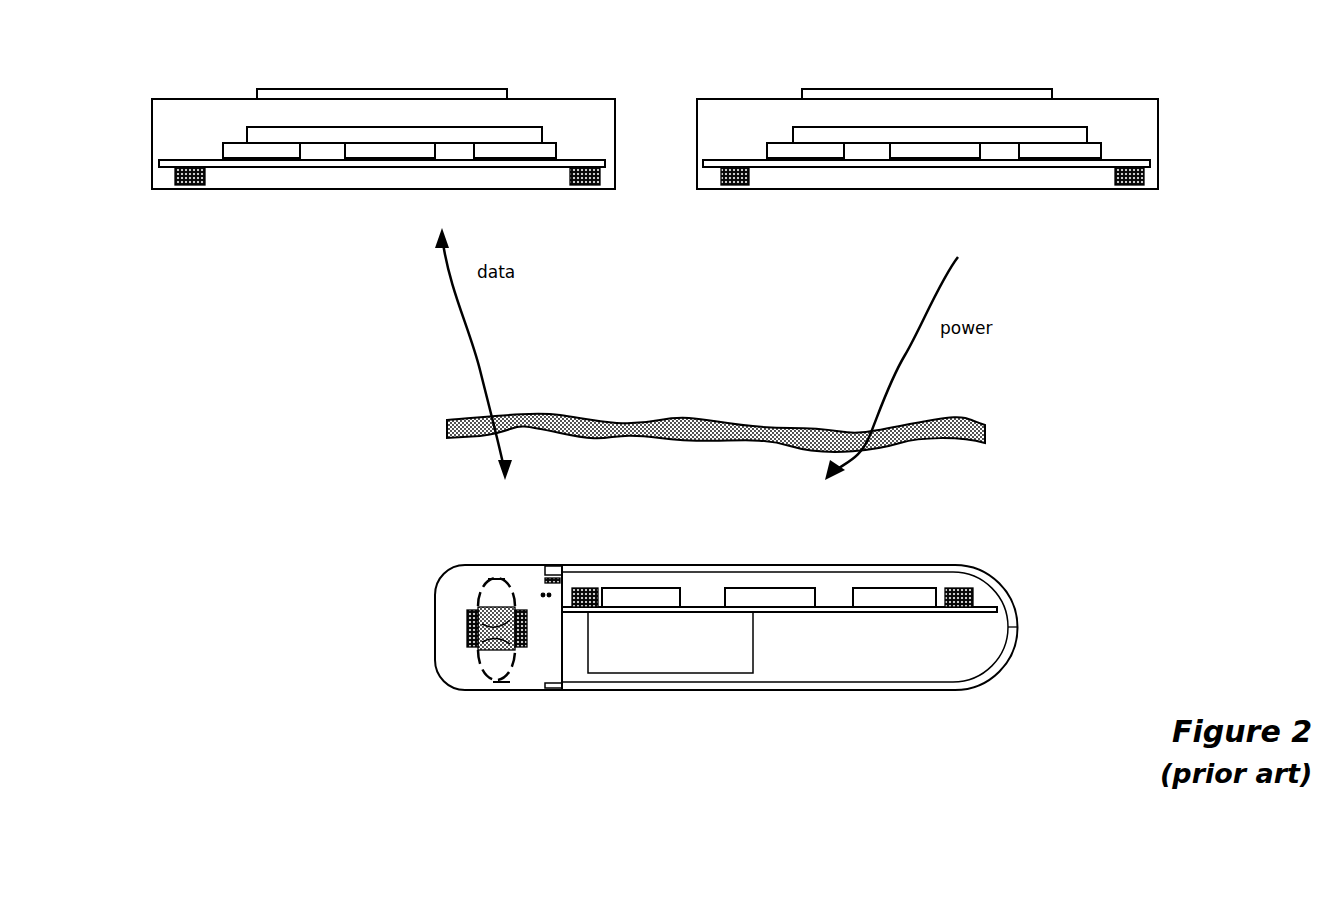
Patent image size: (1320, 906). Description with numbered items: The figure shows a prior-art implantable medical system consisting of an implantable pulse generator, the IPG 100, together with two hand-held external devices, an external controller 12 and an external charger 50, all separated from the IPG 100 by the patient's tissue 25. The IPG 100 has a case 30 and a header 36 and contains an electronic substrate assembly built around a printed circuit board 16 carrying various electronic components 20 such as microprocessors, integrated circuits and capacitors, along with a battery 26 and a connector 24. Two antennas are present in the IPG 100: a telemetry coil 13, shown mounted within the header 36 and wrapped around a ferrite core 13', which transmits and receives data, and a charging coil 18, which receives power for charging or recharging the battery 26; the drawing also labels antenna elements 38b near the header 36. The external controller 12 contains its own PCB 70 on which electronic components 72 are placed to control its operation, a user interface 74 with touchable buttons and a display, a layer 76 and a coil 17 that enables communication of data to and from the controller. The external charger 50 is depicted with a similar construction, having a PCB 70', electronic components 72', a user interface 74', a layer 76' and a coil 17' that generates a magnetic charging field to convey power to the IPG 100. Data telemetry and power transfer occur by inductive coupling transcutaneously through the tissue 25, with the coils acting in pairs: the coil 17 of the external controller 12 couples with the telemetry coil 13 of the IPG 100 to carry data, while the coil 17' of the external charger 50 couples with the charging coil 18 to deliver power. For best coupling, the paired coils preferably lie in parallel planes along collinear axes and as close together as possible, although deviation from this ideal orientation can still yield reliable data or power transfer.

The external controller 12 is at (222, 52).
The external charger 50 is at (767, 52).
The PCB 70 is at (382, 114).
The PCB 70' is at (926, 114).
The electronic components 72 is at (392, 132).
The electronic components 72' is at (939, 132).
The user interface 74 is at (382, 73).
The user interface 74' is at (927, 73).
The intermediate layer 76 is at (394, 106).
The intermediate layer 76' is at (940, 106).
The coil 17 is at (384, 188).
The coil 17' is at (928, 188).
The patient's tissue 25 is at (672, 420).
The IPG 100 is at (412, 735).
The header 36 is at (463, 562).
The case 30 is at (606, 690).
The printed circuit board 16 is at (829, 607).
The charging coil 18 is at (581, 586).
The electronic components 20 is at (642, 597).
The battery 26 is at (659, 664).
The connector 24 is at (541, 563).
The telemetry coil 13 is at (483, 630).
The ferrite core 13' is at (483, 619).
The antenna 38b is at (490, 580).